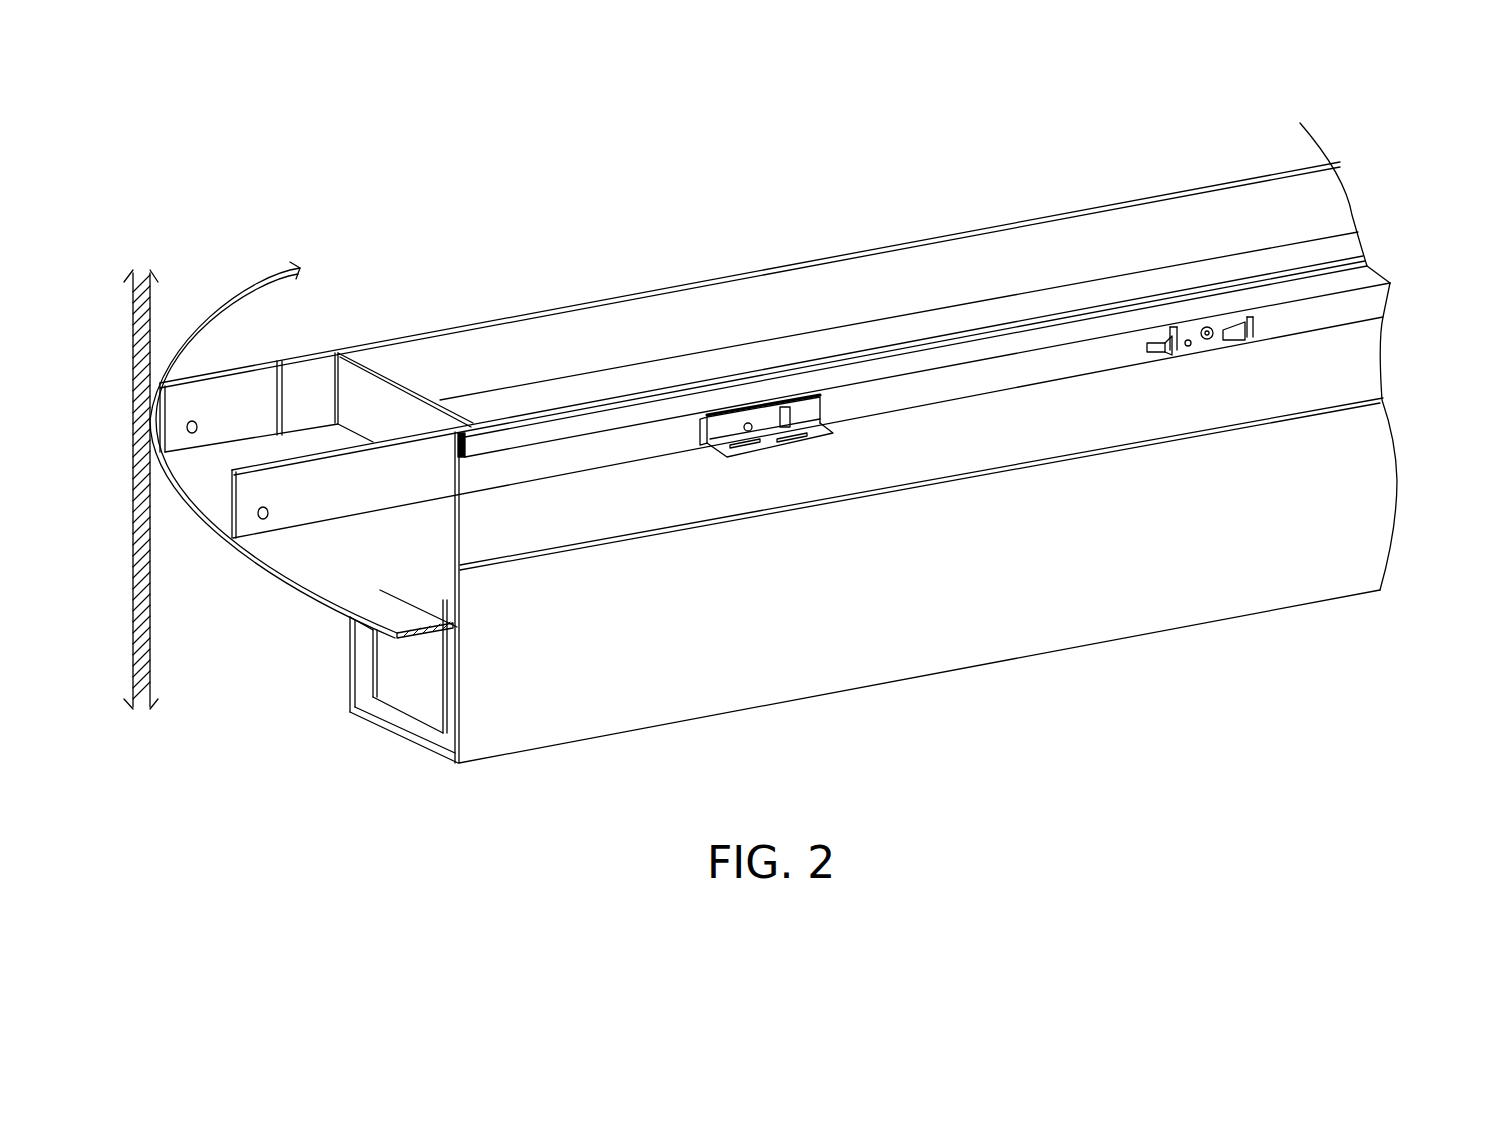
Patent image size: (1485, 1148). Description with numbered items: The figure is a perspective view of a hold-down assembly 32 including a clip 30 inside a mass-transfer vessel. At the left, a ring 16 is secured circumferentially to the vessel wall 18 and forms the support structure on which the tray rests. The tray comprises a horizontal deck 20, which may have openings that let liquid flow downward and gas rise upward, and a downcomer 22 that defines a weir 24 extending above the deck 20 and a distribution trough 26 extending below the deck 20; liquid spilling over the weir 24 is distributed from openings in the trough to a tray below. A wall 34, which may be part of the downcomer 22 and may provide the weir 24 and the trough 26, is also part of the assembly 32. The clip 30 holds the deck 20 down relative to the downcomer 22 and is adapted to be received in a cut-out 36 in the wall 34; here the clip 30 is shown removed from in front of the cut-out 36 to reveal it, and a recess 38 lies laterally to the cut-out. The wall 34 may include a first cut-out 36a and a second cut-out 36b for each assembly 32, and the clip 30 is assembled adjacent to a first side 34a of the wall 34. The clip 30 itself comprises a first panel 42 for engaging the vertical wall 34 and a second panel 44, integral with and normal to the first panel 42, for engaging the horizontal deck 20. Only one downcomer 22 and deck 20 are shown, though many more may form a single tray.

The ring 16 is at (363, 608).
The wall 18 is at (133, 290).
The deck 20 is at (815, 523).
The downcomer 22 is at (1393, 312).
The weir 24 is at (1322, 303).
The distribution trough 26 is at (558, 715).
The clip 30 is at (725, 498).
The assembly 32 is at (1393, 392).
The wall 34 is at (580, 427).
The first side 34a is at (912, 361).
The cut-out 36 is at (1234, 423).
The first cut-out 36a is at (1167, 350).
The second cut-out 36b is at (1237, 333).
The recess 38 is at (1220, 335).
The first panel 42 is at (703, 430).
The second panel 44 is at (810, 433).